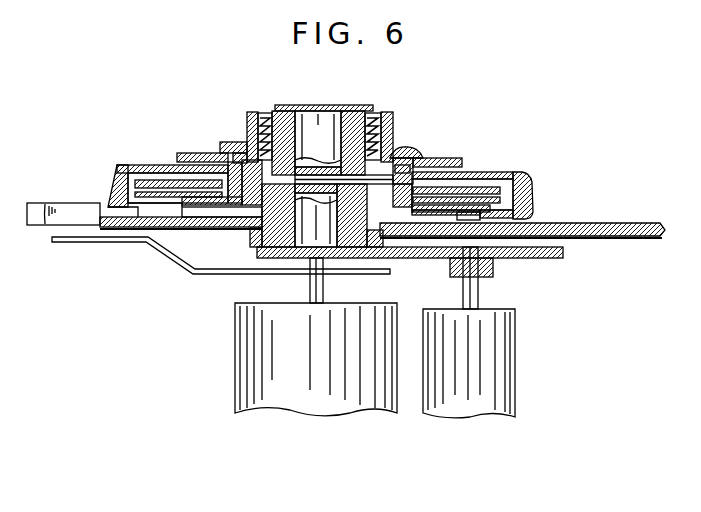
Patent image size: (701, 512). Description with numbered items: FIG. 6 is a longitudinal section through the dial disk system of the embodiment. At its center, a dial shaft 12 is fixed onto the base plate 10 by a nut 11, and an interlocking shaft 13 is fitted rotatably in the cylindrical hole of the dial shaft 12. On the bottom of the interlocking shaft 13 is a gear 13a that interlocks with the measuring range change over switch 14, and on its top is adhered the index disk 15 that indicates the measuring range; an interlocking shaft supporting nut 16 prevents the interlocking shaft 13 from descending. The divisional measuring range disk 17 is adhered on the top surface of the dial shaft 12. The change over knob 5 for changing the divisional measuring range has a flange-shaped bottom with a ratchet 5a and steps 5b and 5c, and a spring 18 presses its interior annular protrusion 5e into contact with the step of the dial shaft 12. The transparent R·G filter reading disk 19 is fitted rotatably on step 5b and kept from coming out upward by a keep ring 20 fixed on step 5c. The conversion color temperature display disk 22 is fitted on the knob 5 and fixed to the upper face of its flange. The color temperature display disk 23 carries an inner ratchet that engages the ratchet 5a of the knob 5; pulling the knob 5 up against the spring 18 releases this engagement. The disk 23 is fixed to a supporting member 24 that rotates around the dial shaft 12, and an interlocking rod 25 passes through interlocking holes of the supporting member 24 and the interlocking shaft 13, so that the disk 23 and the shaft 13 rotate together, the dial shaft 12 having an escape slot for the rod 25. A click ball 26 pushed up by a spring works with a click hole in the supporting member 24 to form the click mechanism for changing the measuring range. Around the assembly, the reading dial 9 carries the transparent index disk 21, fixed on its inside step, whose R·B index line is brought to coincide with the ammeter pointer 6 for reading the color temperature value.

The change over knob 5 is at (396, 160).
The ratchet 5a is at (200, 155).
The step 5b is at (420, 174).
The step 5c is at (400, 148).
The interior annular protrusion 5e is at (247, 150).
The ammeter pointer 6 is at (100, 243).
The reading dial 9 is at (520, 196).
The base plate 10 is at (610, 224).
The nut 11 is at (252, 238).
The dial shaft 12 is at (350, 250).
The interlocking shaft 13 is at (305, 198).
The gear 13a is at (382, 262).
The measuring range change over switch 14 is at (505, 346).
The index disk 15 is at (316, 106).
The interlocking shaft supporting nut 16 is at (346, 110).
The divisional measuring range disk 17 is at (265, 110).
The spring 18 is at (378, 110).
The transparent R·G filter reading disk 19 is at (456, 160).
The keep ring 20 is at (410, 162).
The transparent index disk 21 is at (492, 173).
The conversion color temperature display disk 22 is at (168, 180).
The color temperature display disk 23 is at (135, 167).
The supporting member 24 is at (232, 212).
The interlocking rod 25 is at (347, 185).
The click ball 26 is at (437, 218).